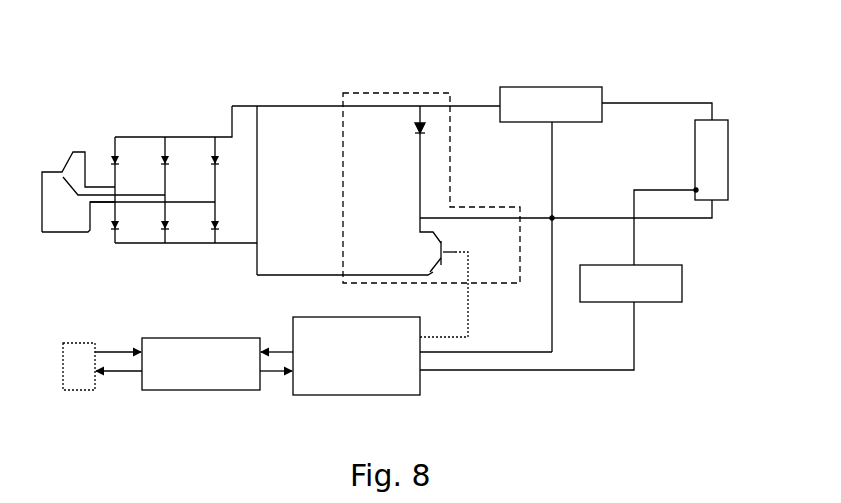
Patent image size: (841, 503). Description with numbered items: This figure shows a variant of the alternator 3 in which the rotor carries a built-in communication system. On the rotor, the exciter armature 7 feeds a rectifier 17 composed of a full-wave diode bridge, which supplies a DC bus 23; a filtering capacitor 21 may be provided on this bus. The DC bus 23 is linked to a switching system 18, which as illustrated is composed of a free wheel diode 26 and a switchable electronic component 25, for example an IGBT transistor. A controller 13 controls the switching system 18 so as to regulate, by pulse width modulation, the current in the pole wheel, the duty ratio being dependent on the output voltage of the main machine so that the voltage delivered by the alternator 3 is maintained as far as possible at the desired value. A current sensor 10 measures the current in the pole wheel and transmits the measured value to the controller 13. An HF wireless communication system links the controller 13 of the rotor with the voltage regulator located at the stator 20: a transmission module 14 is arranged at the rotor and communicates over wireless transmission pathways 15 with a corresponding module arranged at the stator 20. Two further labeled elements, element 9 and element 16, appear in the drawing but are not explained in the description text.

The alternator 3 is at (471, 78).
The exciter armature 7 is at (62, 168).
The heating element RP 9 is at (714, 203).
The current sensor 10 is at (553, 85).
The controller 13 is at (313, 397).
The transmission module 14 is at (203, 392).
The wireless transmission pathways 15 is at (122, 350).
The temperature sensor 16 is at (647, 303).
The rectifier 17 is at (208, 157).
The switching system 18 is at (483, 287).
The stator 20 is at (60, 383).
The filtering capacitor 21 is at (249, 169).
The DC bus 23 is at (247, 106).
The switchable electronic component 25 is at (419, 121).
The free wheel diode 26 is at (451, 250).